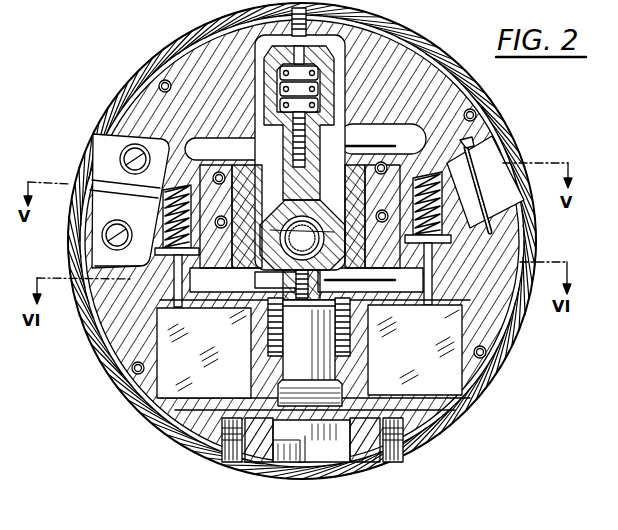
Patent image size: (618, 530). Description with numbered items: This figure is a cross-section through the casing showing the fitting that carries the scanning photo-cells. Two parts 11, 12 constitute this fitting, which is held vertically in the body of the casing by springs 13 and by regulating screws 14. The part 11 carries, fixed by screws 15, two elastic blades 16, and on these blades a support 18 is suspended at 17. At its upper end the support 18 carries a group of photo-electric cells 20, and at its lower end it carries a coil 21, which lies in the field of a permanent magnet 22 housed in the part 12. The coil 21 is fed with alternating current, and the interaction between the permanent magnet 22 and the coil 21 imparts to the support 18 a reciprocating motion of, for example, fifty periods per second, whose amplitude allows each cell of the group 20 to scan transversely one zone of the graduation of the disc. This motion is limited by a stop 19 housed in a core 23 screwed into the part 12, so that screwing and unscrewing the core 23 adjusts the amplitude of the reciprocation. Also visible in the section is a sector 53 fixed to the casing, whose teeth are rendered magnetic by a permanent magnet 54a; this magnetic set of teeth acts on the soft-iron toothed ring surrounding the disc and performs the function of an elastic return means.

The part 11 is at (525, 237).
The part 12 is at (527, 289).
The springs 13 is at (150, 200).
The regulating screws 14 is at (233, 462).
The screws 15 is at (250, 149).
The elastic blades 16 is at (383, 135).
The suspension point 17 is at (348, 281).
The support 18 is at (314, 172).
The stop 19 is at (310, 353).
The photo-electric cells 20 is at (290, 88).
The coil 21 is at (270, 336).
The permanent magnet 22 is at (204, 353).
The core 23 is at (340, 359).
The sector 53 is at (118, 147).
The permanent magnet 54a is at (108, 180).